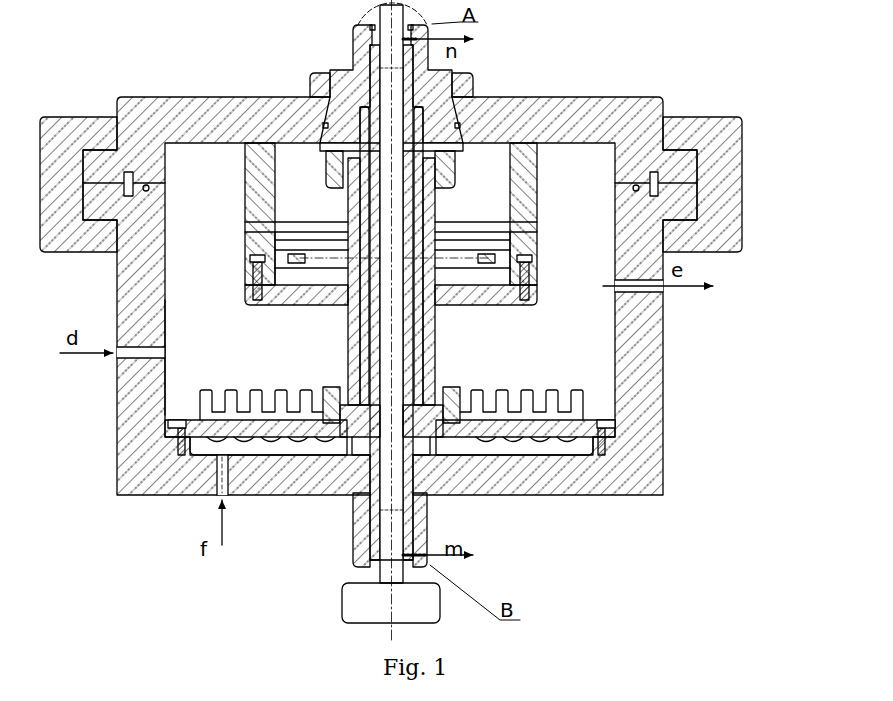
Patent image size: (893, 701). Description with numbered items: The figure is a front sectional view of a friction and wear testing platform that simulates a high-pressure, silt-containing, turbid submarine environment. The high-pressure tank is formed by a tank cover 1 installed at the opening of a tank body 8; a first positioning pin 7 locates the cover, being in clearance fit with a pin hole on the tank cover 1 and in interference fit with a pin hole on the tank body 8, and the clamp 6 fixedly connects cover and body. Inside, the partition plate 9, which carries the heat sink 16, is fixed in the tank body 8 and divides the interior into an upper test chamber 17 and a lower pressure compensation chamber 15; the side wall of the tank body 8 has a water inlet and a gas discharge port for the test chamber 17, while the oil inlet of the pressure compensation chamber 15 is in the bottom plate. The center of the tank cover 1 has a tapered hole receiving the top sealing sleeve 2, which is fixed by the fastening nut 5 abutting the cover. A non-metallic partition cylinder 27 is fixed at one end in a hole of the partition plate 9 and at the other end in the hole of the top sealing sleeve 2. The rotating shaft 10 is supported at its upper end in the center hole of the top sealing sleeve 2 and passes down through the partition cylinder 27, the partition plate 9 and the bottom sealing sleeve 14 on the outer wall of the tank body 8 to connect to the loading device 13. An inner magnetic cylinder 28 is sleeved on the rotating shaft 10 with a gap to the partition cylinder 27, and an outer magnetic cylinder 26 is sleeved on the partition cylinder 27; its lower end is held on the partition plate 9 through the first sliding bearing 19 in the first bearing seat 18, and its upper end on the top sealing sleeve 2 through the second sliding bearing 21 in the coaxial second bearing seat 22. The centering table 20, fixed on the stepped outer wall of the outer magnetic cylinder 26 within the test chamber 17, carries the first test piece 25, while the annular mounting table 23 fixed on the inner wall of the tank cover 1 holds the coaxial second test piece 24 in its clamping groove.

The tank cover 1 is at (225, 115).
The top sealing sleeve 2 is at (352, 80).
The fastening nut 5 is at (465, 82).
The clamp 6 is at (718, 140).
The first positioning pin 7 is at (688, 186).
The tank body 8 is at (645, 337).
The partition plate 9 is at (586, 418).
The rotating shaft 10 is at (415, 505).
The loading device 13 is at (360, 598).
The bottom sealing sleeve 14 is at (356, 512).
The pressure compensation chamber 15 is at (215, 495).
The heat sink 16 is at (232, 418).
The test chamber 17 is at (207, 370).
The first bearing seat 18 is at (318, 414).
The first sliding bearing 19 is at (331, 398).
The centering table 20 is at (256, 263).
The second sliding bearing 21 is at (333, 172).
The second bearing seat 22 is at (330, 148).
The mounting table 23 is at (523, 168).
The second test piece 24 is at (535, 228).
The first test piece 25 is at (530, 260).
The outer magnetic cylinder 26 is at (429, 317).
The partition cylinder 27 is at (424, 340).
The inner magnetic cylinder 28 is at (414, 375).